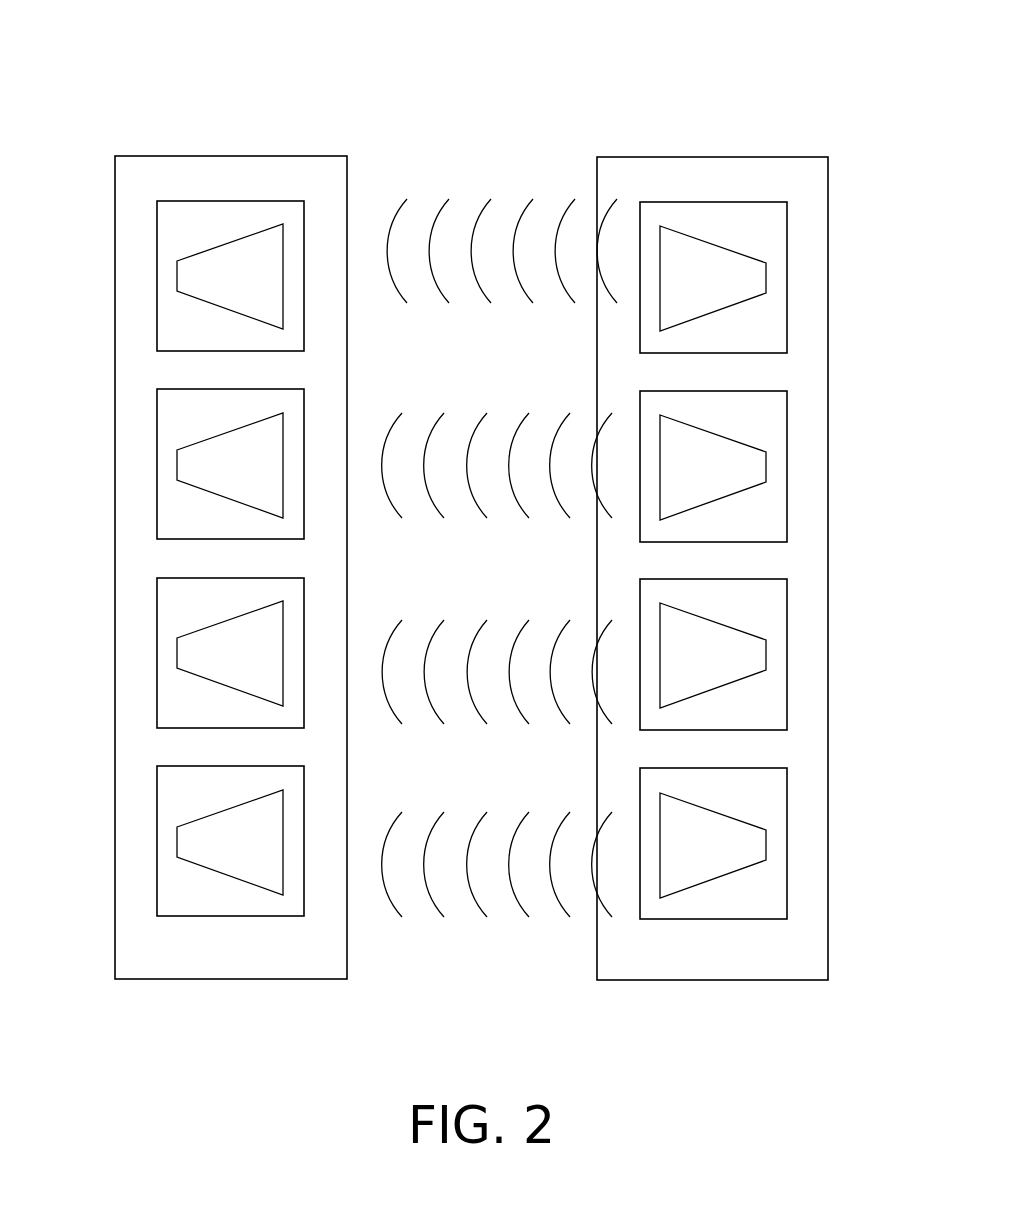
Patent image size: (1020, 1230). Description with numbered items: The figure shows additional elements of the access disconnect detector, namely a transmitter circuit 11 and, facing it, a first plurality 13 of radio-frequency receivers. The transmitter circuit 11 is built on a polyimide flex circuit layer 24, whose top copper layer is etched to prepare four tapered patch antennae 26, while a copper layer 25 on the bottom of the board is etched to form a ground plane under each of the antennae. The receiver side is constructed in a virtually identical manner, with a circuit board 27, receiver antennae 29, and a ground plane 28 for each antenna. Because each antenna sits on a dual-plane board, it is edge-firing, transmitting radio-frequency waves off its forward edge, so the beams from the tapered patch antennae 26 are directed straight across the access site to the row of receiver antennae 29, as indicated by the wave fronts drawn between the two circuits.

The first plurality of radio-frequency receivers 13 is at (112, 95).
The first plurality of radio-frequency transmitters 11 is at (711, 95).
The circuit board 27 is at (115, 255).
The ground plane 28 is at (157, 322).
The receiver antennae 29 is at (177, 465).
The polyimide flex circuit layer 24 is at (830, 271).
The copper layer 25 is at (788, 336).
The tapered patch antennae 26 is at (766, 465).